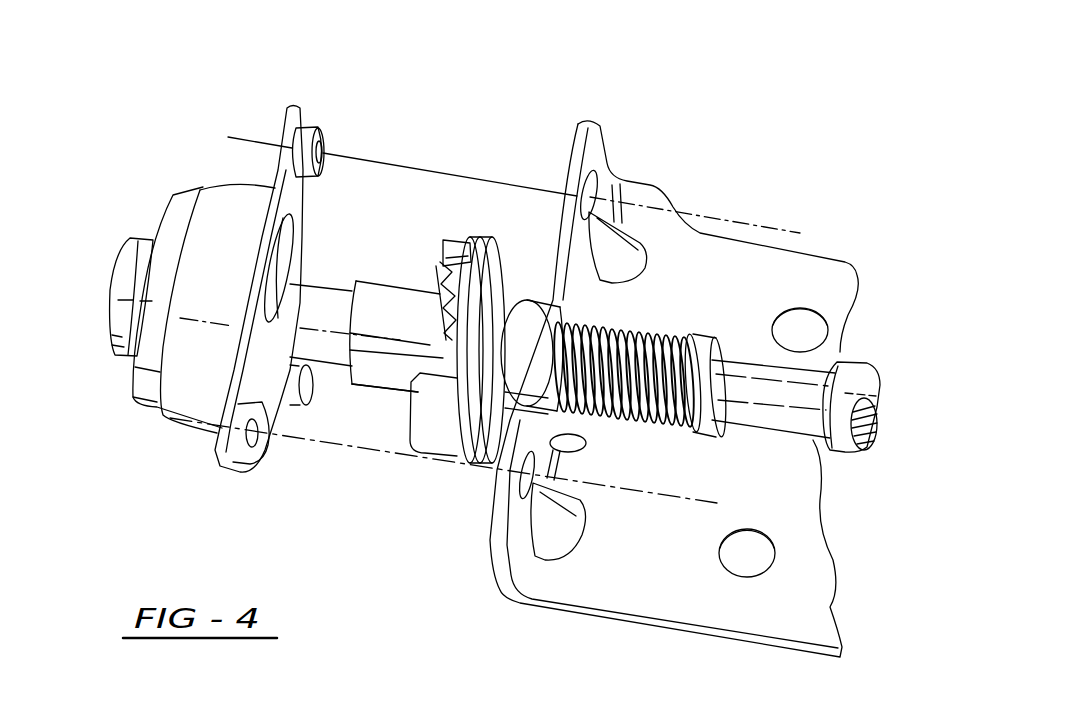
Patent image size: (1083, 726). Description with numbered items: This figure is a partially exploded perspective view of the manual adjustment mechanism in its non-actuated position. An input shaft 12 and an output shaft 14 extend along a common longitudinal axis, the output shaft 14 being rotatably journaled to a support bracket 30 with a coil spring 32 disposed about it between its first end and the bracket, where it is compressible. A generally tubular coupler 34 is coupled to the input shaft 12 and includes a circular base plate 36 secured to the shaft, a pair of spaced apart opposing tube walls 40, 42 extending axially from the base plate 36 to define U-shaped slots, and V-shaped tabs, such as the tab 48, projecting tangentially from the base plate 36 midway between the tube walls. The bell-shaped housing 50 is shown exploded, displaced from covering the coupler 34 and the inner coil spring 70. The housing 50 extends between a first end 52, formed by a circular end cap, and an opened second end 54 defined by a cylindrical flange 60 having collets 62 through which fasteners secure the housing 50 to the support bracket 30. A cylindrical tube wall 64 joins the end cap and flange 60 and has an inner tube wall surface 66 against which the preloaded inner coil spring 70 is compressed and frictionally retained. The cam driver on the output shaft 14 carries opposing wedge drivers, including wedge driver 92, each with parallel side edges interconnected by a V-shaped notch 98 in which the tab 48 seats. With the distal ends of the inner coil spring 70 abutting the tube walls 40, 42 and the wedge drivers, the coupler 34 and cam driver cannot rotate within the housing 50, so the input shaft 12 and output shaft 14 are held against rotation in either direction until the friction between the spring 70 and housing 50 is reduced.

The input shaft 12 is at (356, 389).
The output shaft 14 is at (759, 440).
The support bracket 30 is at (600, 593).
The coil spring 32 is at (690, 320).
The coupler 34 is at (441, 222).
The base plate 36 is at (405, 347).
The tube wall 40 is at (430, 423).
The tube wall 42 is at (464, 253).
The V-shaped tab 48 is at (445, 278).
The housing 50 is at (200, 183).
The first end 52 is at (132, 238).
The second end 54 is at (233, 466).
The cylindrical flange 60 is at (286, 247).
The collet 62 is at (307, 127).
The tube wall 64 is at (160, 398).
The inner tube wall surface 66 is at (275, 280).
The inner coil spring 70 is at (520, 236).
The wedge driver 92 is at (440, 275).
The V-shaped notch 98 is at (390, 320).